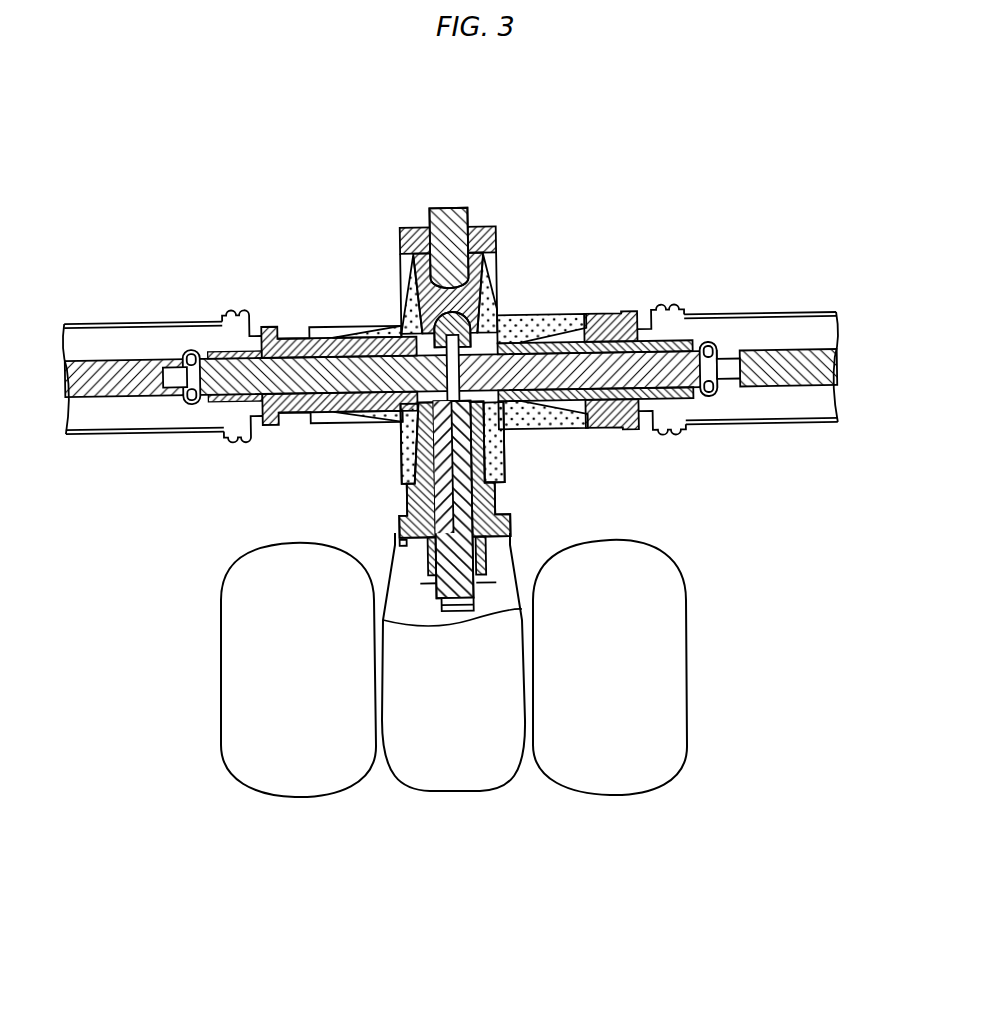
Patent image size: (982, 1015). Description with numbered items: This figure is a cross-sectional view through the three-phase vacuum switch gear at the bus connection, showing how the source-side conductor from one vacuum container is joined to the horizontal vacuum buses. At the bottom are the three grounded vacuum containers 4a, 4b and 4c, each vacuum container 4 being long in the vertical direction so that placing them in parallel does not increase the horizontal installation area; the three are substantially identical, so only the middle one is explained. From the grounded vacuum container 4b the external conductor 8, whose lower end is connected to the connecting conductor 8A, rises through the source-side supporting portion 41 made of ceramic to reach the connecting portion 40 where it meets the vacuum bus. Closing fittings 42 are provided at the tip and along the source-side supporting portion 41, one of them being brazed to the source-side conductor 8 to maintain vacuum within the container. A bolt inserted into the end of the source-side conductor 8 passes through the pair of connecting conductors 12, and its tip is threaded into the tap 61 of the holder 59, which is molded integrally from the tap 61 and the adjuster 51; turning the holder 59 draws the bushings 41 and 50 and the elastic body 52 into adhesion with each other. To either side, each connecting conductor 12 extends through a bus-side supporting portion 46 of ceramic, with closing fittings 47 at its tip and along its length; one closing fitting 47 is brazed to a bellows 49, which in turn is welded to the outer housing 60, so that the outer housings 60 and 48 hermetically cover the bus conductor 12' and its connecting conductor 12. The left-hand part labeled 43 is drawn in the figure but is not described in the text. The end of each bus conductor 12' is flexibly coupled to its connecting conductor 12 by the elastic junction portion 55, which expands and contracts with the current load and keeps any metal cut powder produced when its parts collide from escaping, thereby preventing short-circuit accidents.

The vacuum container 4 is at (496, 699).
The grounded vacuum container 4a is at (263, 797).
The grounded vacuum container 4b is at (418, 795).
The grounded vacuum container 4c is at (593, 795).
The external conductor 8 is at (436, 603).
The connecting conductor 8A is at (456, 613).
The connecting conductor 12 is at (452, 414).
The bus conductor 12' is at (476, 403).
The connecting portion 40 is at (333, 277).
The source-side supporting portion 41 is at (506, 512).
The closing fitting 42 is at (395, 536).
The left bearing housing 43 is at (361, 428).
The bus-side supporting portion 46 is at (607, 410).
The closing fitting 47 is at (641, 307).
The outer housing 48 is at (590, 320).
The bellows 49 is at (668, 433).
The bushing 50 is at (499, 226).
The adjuster 51 is at (470, 212).
The elastic body 52 is at (490, 293).
The connecting portion 55 is at (713, 342).
The holder 59 is at (410, 226).
The outer housing 60 is at (802, 306).
The tap 61 is at (468, 328).